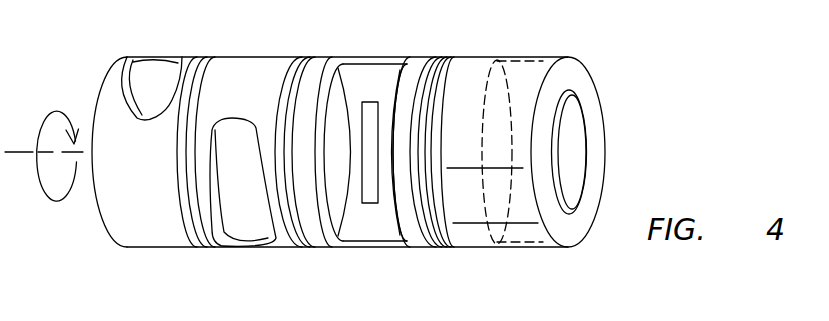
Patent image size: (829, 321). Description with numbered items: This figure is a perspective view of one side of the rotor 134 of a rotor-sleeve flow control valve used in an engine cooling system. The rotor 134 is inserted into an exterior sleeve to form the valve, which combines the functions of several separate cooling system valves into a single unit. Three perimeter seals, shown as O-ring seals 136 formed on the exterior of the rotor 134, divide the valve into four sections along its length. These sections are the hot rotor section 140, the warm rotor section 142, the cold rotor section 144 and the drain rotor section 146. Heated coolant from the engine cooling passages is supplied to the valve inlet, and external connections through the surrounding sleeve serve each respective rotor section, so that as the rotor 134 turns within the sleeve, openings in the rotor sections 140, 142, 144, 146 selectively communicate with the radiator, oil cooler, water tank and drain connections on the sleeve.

The rotor 134 is at (244, 57).
The O-ring seals 136 is at (317, 57).
The hot rotor section 140 is at (510, 249).
The warm rotor section 142 is at (388, 249).
The cold rotor section 144 is at (245, 249).
The drain rotor section 146 is at (157, 248).